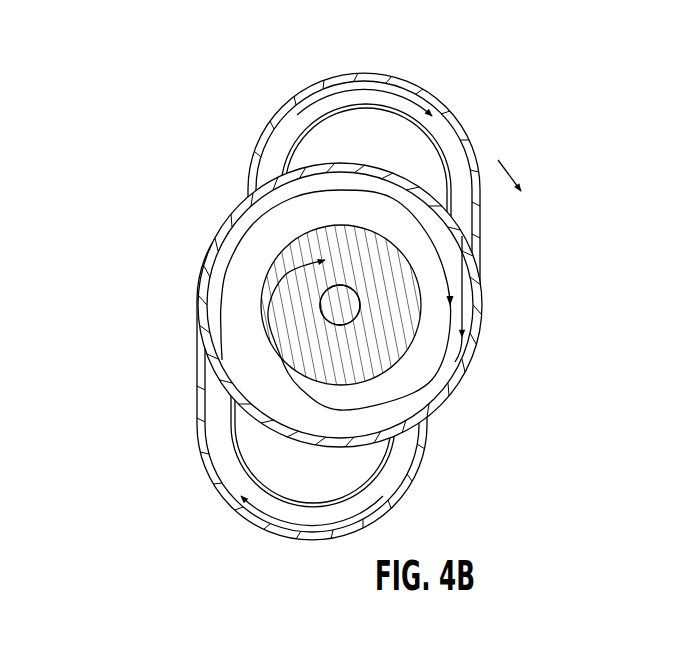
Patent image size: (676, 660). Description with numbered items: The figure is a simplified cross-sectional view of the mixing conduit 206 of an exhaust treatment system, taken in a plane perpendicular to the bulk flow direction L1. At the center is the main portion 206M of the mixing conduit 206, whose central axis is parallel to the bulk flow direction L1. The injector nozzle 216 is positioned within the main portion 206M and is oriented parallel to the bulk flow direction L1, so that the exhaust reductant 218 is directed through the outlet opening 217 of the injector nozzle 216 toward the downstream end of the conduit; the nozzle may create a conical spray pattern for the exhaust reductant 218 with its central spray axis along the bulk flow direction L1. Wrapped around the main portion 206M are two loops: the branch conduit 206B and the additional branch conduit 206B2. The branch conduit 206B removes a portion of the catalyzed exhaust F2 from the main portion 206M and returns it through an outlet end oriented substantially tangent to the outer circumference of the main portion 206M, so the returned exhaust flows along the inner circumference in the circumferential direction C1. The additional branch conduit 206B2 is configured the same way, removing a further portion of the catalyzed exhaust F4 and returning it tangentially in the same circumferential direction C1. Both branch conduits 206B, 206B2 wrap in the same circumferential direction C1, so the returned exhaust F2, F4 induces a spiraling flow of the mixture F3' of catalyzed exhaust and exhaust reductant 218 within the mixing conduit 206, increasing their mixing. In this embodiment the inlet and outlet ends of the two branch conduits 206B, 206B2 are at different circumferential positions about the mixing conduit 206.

The mixing conduit 206 is at (311, 304).
The additional branch conduit 206B2 is at (393, 72).
The branch conduit 206B is at (218, 490).
The main portion 206M is at (336, 163).
The injector nozzle 216 is at (424, 203).
The bulk flow direction L1 is at (358, 290).
The outlet opening 217 is at (358, 305).
The exhaust reductant 218 is at (273, 253).
The further portion of the catalyzed exhaust F4 is at (348, 88).
The portion of the catalyzed exhaust F2 is at (318, 525).
The mixture of the catalyzed exhaust and the exhaust reductant F3' is at (301, 335).
The circumferential direction C1 is at (508, 170).